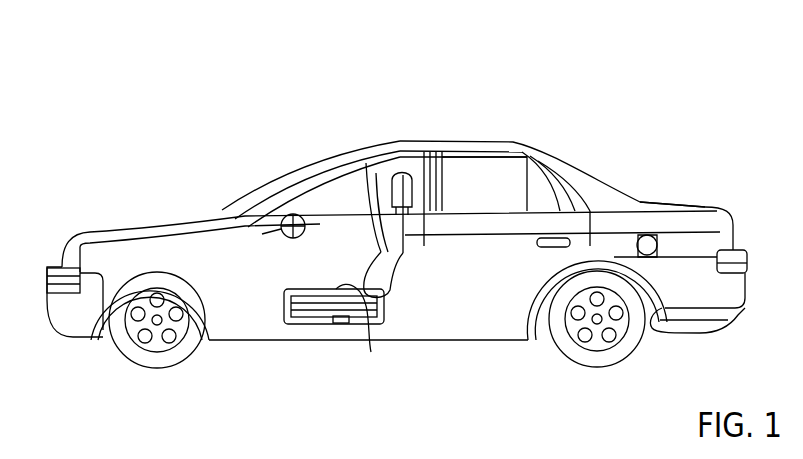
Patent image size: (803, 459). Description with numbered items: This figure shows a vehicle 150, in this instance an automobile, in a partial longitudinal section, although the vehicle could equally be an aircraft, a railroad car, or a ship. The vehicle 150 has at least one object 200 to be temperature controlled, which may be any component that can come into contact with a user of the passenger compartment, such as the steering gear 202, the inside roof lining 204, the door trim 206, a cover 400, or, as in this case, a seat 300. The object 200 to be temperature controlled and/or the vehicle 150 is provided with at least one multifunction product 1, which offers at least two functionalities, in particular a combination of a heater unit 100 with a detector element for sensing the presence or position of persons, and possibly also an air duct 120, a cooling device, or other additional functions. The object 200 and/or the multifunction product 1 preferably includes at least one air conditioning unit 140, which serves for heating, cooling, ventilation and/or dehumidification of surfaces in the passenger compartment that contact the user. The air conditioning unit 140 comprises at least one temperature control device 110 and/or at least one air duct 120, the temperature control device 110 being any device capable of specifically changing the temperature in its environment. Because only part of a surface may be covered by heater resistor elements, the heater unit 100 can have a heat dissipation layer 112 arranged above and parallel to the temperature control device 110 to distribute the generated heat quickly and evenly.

The multifunction product 1 is at (308, 345).
The heater unit 100 is at (313, 294).
The temperature control device 110 is at (247, 213).
The heat dissipation layer 112 is at (361, 336).
The air duct 120 is at (396, 295).
The air conditioning unit 140 is at (282, 290).
The vehicle 150 is at (647, 177).
The object to be temperature controlled 200 is at (332, 238).
The steering gear 202 is at (288, 205).
The inside roof lining 204 is at (428, 136).
The door trim 206 is at (495, 211).
The seat 300 is at (382, 258).
The cover 400 is at (379, 232).